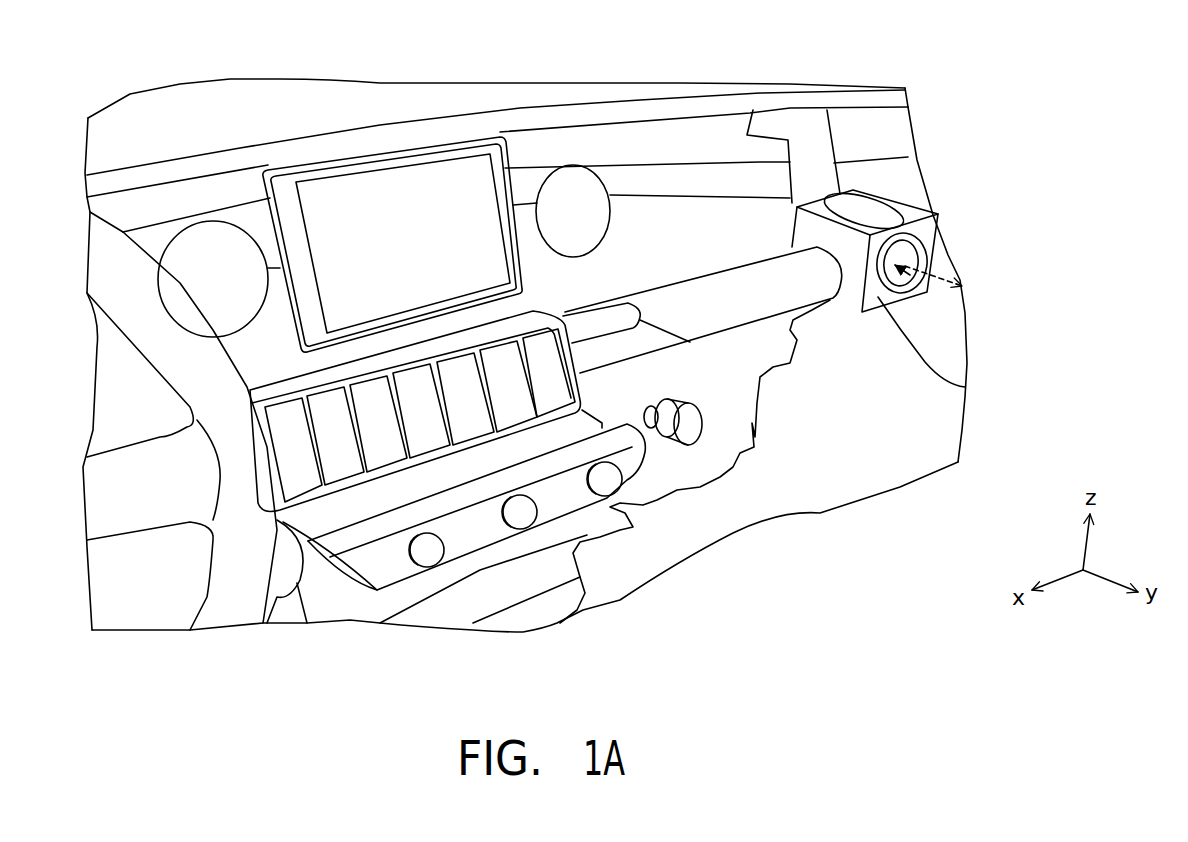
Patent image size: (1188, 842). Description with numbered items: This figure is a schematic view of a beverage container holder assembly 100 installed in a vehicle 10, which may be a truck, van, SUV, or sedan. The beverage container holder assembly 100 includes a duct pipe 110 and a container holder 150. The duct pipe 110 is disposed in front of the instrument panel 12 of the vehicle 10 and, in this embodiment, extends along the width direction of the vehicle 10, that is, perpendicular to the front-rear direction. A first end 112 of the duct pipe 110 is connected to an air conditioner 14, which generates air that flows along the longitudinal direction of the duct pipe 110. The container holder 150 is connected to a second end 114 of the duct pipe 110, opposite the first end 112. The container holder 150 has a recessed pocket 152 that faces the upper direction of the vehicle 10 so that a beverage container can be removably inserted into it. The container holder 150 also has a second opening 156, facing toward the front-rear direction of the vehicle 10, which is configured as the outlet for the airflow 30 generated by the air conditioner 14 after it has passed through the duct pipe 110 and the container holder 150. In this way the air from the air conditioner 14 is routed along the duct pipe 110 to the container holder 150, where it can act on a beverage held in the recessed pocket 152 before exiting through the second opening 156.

The vehicle 10 is at (800, 66).
The instrument panel 12 is at (710, 222).
The air conditioner 14 is at (547, 352).
The airflow 30 is at (950, 280).
The beverage container holder assembly 100 is at (939, 253).
The duct pipe 110 is at (737, 293).
The first end 112 is at (607, 320).
The second end 114 is at (965, 387).
The container holder 150 is at (918, 212).
The recessed pocket 152 is at (868, 216).
The second opening 156 is at (880, 280).